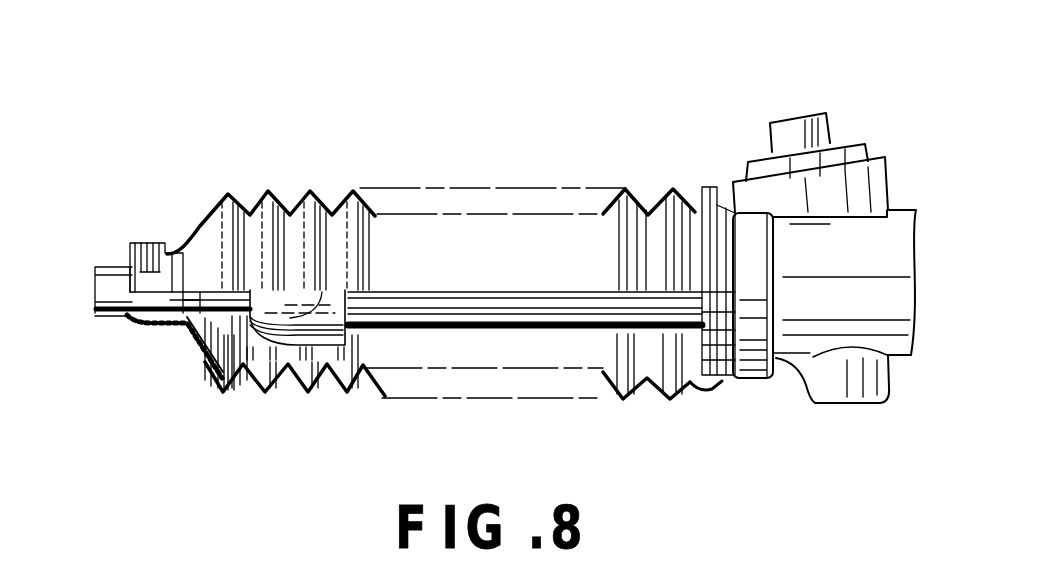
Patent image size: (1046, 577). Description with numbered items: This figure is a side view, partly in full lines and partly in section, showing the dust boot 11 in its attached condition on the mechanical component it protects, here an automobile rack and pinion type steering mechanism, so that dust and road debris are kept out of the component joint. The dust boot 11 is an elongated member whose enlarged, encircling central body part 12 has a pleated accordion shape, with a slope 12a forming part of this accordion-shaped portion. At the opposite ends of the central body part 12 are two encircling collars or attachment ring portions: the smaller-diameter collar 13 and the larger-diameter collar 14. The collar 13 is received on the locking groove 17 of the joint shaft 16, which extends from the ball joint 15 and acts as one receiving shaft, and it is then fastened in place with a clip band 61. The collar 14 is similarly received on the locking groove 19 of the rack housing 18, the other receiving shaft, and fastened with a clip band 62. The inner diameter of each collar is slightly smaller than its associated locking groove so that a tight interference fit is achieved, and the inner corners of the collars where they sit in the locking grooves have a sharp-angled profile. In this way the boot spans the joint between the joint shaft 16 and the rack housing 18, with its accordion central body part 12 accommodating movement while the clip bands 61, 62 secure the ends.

The dust boot 11 is at (362, 200).
The central body part 12 is at (378, 395).
The slope 12a is at (203, 357).
The collar 13 is at (142, 328).
The collar 14 is at (705, 393).
The ball joint 15 is at (295, 318).
The joint shaft 16 is at (108, 266).
The locking groove 17 is at (118, 318).
The rack housing 18 is at (820, 336).
The locking groove 19 is at (733, 378).
The clip band 61 is at (138, 243).
The clip band 62 is at (708, 187).